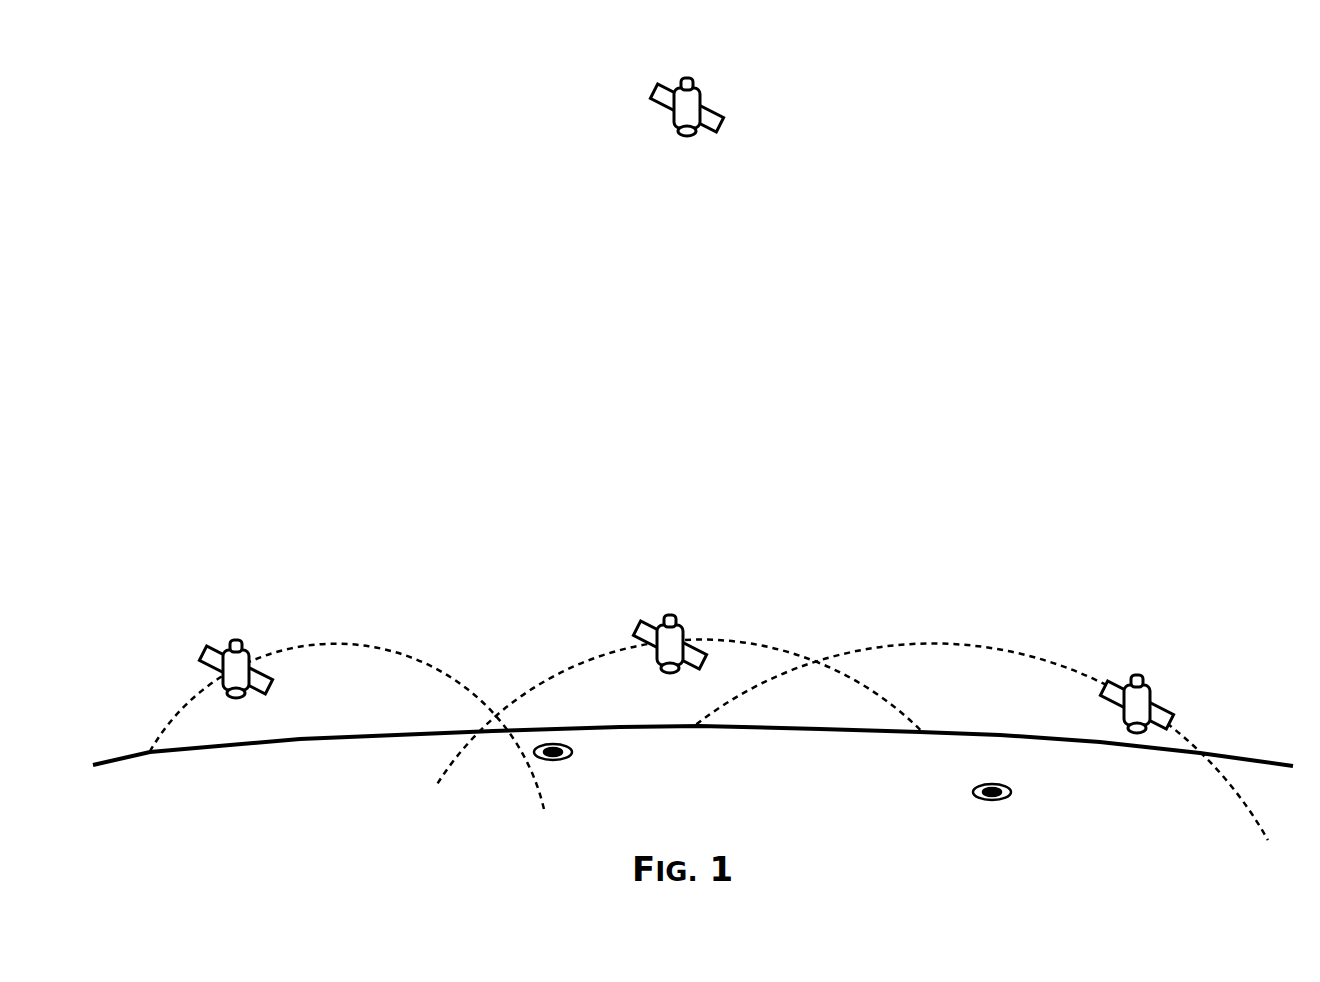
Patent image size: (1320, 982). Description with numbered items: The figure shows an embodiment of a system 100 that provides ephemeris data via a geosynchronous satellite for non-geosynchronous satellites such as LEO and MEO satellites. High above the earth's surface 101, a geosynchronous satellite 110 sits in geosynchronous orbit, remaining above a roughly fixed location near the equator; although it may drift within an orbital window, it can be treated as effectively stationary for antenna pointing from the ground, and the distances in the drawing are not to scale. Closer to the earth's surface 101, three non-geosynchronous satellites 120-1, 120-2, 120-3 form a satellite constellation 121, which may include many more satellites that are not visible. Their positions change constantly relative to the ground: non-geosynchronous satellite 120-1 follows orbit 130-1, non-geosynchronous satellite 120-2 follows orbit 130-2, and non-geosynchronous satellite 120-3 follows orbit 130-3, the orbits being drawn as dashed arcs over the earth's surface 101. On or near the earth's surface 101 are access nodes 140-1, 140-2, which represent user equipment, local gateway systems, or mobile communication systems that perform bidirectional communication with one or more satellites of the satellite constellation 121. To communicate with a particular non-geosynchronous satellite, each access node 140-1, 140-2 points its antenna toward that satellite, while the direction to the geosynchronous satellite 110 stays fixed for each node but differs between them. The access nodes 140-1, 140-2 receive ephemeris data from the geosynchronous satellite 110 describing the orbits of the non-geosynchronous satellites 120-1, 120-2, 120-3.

The system 100 is at (145, 86).
The earth's surface 101 is at (781, 773).
The geosynchronous satellite 110 is at (719, 116).
The satellite constellation 121 is at (1175, 536).
The non-geosynchronous satellite 120-1 is at (244, 643).
The non-geosynchronous satellite 120-2 is at (677, 617).
The non-geosynchronous satellite 120-3 is at (1145, 679).
The orbit 130-1 is at (371, 641).
The orbit 130-2 is at (768, 648).
The orbit 130-3 is at (1054, 661).
The access node 140-1 is at (564, 761).
The access node 140-2 is at (997, 786).